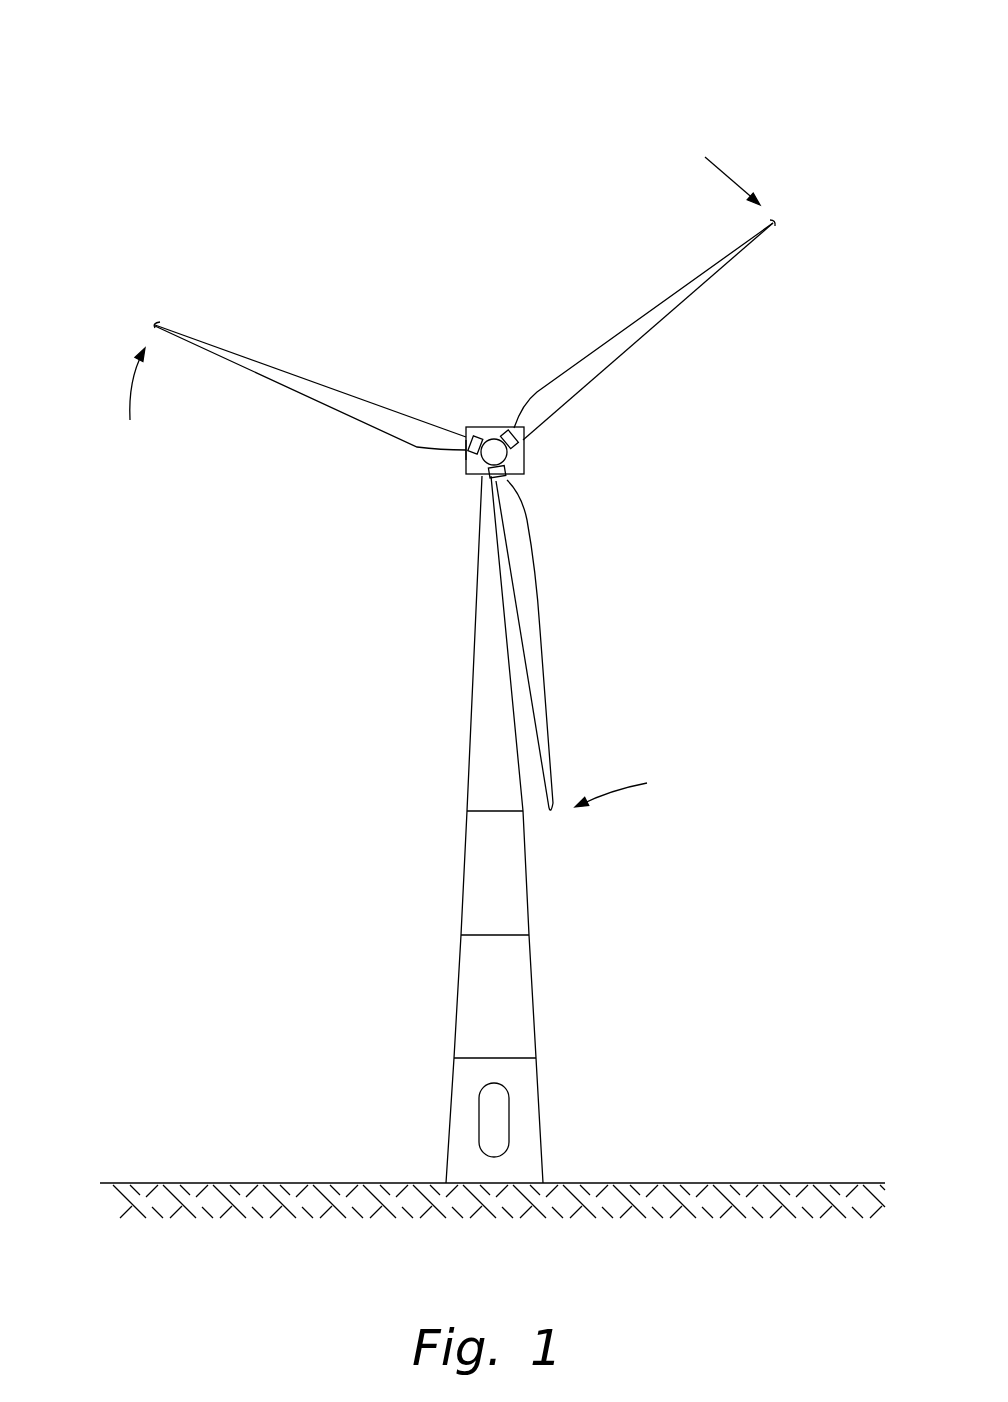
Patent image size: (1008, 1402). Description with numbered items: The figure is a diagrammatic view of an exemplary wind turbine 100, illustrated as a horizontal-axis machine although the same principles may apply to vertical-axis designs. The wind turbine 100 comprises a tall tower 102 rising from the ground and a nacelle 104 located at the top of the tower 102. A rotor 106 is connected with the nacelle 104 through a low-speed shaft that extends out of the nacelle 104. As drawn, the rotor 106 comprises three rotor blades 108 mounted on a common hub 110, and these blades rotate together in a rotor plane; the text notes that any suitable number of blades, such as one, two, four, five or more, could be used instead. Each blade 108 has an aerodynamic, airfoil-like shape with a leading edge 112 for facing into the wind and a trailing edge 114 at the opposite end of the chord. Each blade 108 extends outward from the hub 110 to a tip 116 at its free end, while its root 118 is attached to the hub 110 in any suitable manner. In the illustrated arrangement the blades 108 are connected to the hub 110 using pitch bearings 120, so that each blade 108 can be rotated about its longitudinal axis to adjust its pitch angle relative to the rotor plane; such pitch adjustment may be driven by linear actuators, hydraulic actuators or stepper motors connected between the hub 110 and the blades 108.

The wind turbine 100 is at (152, 31).
The tower 102 is at (470, 880).
The nacelle 104 is at (478, 478).
The rotor 106 is at (562, 458).
The rotor blade 108 is at (345, 397).
The hub 110 is at (494, 452).
The leading edge 112 is at (285, 372).
The trailing edge 114 is at (297, 391).
The tip 116 is at (128, 300).
The root 118 is at (448, 465).
The pitch bearing 120 is at (462, 436).